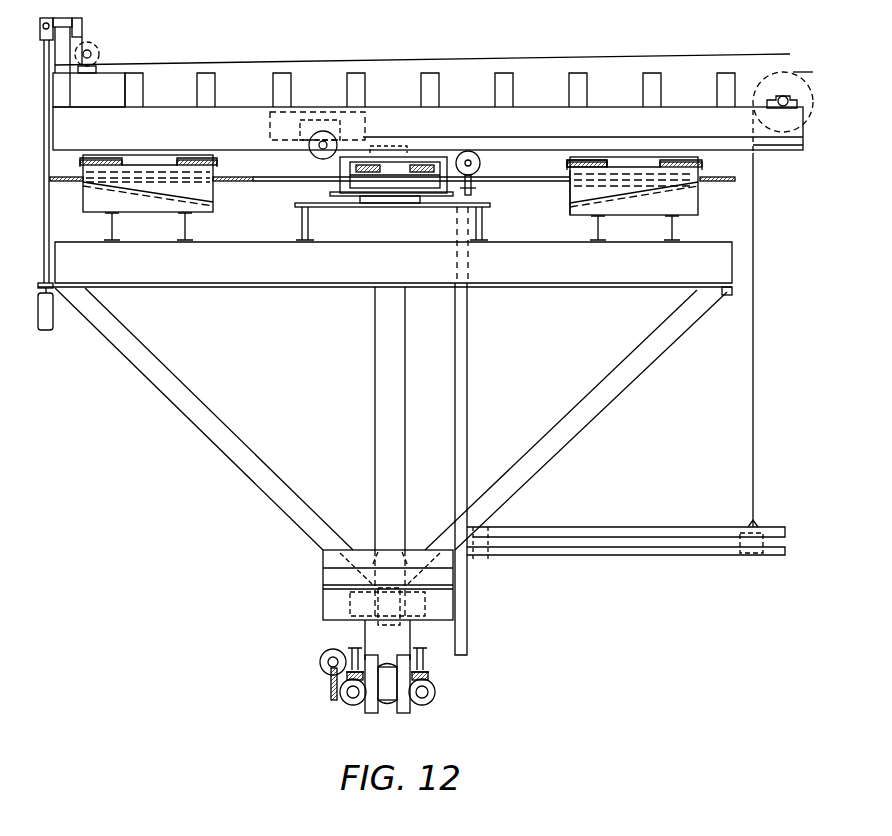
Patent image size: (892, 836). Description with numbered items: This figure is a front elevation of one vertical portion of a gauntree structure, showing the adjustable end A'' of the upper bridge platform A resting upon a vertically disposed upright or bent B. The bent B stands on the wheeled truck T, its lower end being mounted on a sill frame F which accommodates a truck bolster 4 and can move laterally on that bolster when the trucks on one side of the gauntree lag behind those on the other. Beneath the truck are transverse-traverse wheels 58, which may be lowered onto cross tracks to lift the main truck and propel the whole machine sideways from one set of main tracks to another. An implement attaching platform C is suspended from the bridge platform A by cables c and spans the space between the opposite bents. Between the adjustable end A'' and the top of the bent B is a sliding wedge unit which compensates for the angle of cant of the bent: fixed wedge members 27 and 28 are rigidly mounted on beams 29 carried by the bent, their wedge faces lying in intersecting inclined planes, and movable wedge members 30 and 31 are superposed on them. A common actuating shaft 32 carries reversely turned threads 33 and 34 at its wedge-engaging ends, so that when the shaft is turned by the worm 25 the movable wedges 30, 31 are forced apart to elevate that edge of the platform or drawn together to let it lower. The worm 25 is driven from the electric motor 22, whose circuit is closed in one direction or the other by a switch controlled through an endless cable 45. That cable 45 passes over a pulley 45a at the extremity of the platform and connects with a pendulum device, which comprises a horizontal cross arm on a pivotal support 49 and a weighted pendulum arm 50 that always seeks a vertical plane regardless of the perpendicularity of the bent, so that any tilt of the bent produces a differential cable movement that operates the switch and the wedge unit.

The bridge platform A is at (428, 94).
The adjustable end of the bridge A'' is at (393, 89).
The endless cable 45 is at (434, 83).
The pulley 45a is at (99, 52).
The pivotal support 49 is at (83, 27).
The fixed wedge member 27 is at (61, 150).
The weighted pendulum arm 50 is at (55, 237).
The reversely turned thread 33 is at (232, 178).
The common actuating shaft 32 is at (297, 178).
The movable wedge member 30 is at (200, 188).
The fixed wedge member 28 is at (698, 210).
The reversely turned thread 34 is at (572, 166).
The movable wedge member 31 is at (568, 192).
The beams 29 is at (188, 230).
The motor 22 is at (482, 166).
The worm 25 is at (468, 152).
The bent B is at (385, 448).
The implement attaching platform C is at (614, 540).
The cables c is at (752, 452).
The sill frame F is at (323, 602).
The wheeled truck T is at (322, 652).
The truck bolster 4 is at (418, 615).
The transverse-traverse wheels 58 is at (338, 693).